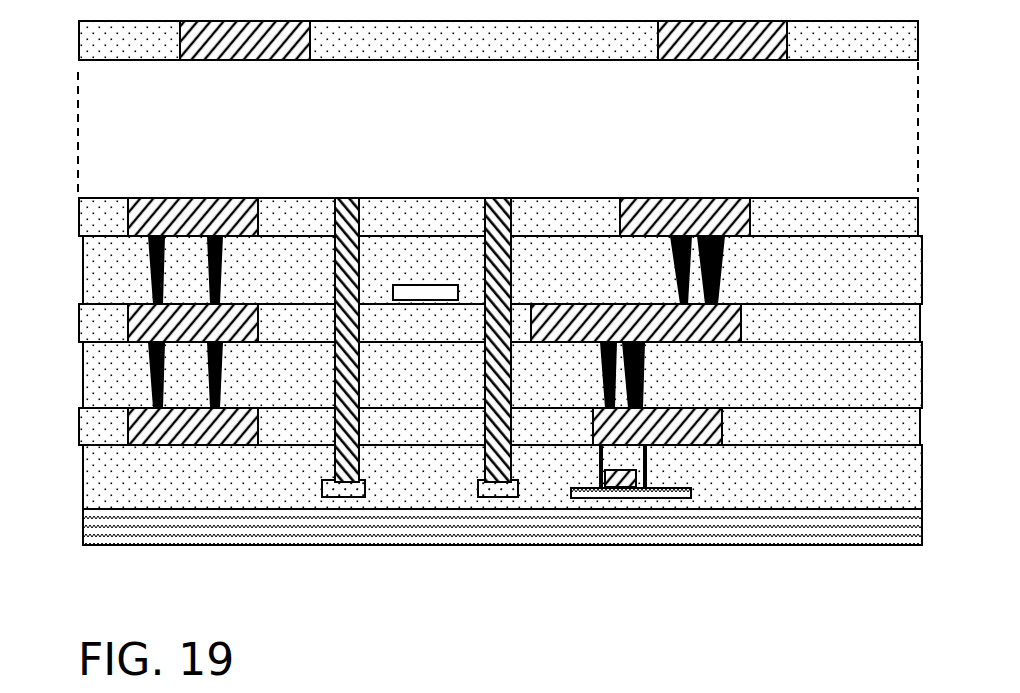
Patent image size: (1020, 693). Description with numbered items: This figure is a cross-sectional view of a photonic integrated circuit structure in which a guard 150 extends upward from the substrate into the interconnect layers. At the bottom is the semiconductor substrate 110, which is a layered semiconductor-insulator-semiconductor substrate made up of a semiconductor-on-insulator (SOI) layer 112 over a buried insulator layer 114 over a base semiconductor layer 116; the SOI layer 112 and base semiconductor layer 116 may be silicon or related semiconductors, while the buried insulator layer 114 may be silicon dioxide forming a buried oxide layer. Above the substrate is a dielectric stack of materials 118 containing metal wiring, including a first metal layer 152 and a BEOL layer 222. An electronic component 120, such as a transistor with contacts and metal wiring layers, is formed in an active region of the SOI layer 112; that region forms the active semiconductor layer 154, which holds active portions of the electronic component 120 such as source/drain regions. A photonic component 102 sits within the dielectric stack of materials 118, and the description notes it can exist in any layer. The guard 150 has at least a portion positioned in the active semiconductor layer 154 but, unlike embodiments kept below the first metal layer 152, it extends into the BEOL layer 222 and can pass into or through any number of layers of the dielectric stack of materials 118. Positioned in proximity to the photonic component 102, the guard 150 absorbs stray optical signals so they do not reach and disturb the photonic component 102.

The photonic component 102 is at (436, 295).
The semiconductor substrate 110 is at (464, 544).
The semiconductor-on-insulator (SOI) layer 112 is at (580, 489).
The buried insulator layer 114 is at (585, 558).
The base semiconductor layer 116 is at (502, 558).
The dielectric stack of materials 118 is at (464, 265).
The electronic component 120 is at (598, 537).
The guard 150 is at (364, 236).
The first metal layer 152 is at (713, 446).
The active semiconductor layer 154 is at (690, 572).
The BEOL layer 222 is at (296, 224).